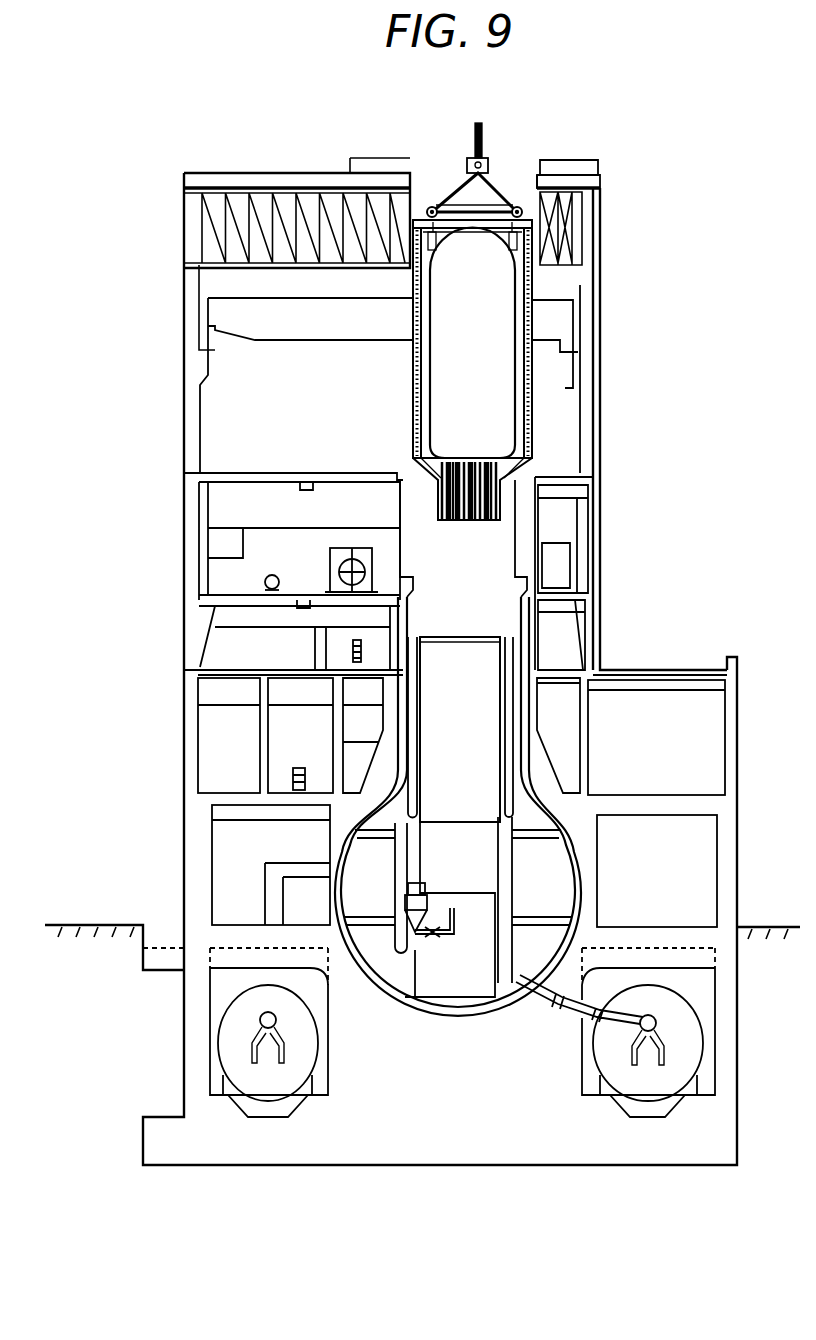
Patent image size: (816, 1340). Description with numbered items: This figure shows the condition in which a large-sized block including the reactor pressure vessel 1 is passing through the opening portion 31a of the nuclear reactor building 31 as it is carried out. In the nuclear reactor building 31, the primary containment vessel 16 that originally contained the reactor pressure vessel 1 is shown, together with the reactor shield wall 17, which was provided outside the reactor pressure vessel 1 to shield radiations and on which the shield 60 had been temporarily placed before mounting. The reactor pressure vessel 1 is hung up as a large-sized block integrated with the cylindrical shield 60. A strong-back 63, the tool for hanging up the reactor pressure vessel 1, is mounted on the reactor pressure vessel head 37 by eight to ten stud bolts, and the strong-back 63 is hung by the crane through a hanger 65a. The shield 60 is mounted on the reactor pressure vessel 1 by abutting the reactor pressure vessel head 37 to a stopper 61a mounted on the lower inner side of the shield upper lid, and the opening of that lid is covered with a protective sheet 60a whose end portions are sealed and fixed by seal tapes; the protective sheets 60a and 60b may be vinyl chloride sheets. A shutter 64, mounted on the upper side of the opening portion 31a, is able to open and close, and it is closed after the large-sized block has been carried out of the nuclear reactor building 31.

The reactor pressure vessel 1 is at (515, 370).
The nuclear reactor primary containment vessel 16 is at (523, 625).
The reactor shield wall 17 is at (500, 672).
The nuclear reactor building 31 is at (601, 442).
The opening portion 31a is at (515, 181).
The reactor pressure vessel head 37 is at (548, 268).
The shield 60 is at (535, 322).
The protective sheet 60a is at (530, 224).
The protective sheet 60b is at (510, 505).
The stopper 61a is at (508, 240).
The strong-back 63 is at (517, 200).
The shutter 64 is at (598, 160).
The hanger 65a is at (483, 140).